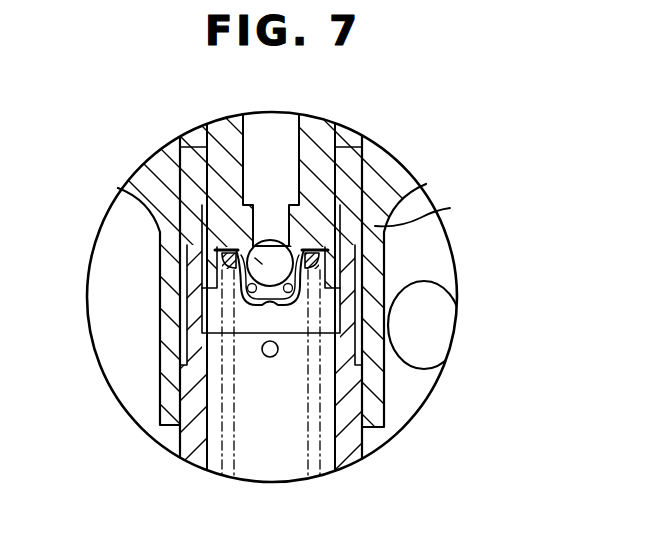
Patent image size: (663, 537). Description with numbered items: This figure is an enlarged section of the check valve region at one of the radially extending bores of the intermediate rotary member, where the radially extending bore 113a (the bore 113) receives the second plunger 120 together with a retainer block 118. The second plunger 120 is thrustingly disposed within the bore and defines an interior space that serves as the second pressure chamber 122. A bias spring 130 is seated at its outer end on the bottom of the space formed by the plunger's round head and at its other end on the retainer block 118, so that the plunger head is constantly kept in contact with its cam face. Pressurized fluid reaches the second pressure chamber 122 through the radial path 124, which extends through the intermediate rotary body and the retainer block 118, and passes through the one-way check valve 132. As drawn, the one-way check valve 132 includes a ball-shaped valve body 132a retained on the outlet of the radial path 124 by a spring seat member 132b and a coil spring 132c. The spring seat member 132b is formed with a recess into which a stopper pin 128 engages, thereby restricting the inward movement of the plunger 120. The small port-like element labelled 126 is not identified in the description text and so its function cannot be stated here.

The radially extending bore 113 is at (378, 259).
The radially extending bore 113a is at (453, 207).
The retainer block 118 is at (317, 175).
The second plunger 120 is at (347, 456).
The second pressure chamber 122 is at (228, 468).
The radial path 124 is at (276, 118).
The ball 126 is at (200, 333).
The stopper pin 128 is at (272, 357).
The bias spring 130 is at (388, 303).
The one-way check valve 132 is at (313, 313).
The ball-shaped valve body 132a is at (185, 178).
The spring seat member 132b is at (222, 152).
The coil spring 132c is at (227, 423).